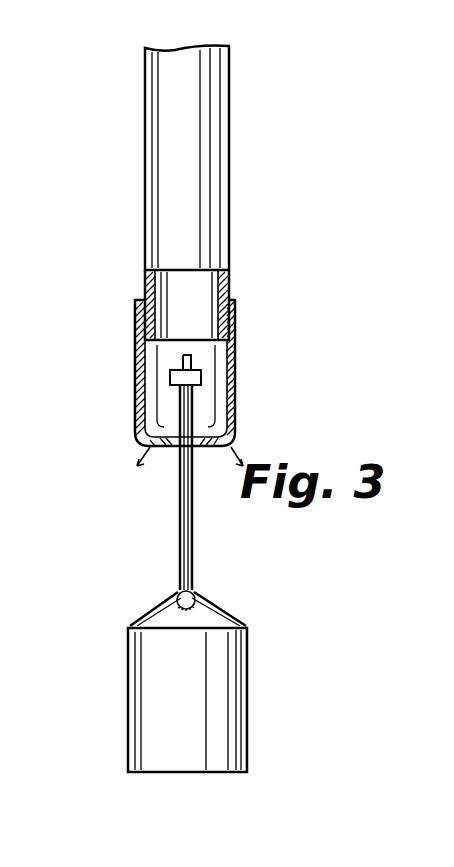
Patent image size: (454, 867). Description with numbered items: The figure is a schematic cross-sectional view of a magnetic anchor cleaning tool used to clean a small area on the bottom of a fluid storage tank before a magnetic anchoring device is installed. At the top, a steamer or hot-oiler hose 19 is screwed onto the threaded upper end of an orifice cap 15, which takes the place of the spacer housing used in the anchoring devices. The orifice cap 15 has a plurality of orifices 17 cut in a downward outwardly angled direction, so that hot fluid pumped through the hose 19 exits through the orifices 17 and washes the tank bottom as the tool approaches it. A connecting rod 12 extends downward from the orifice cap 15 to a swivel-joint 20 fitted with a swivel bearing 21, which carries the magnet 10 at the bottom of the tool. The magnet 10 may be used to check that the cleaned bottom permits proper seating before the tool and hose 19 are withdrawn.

The steamer or hot-oiler hose 19 is at (229, 157).
The orifice cap 15 is at (235, 340).
The orifices 17 is at (150, 447).
The connecting rod 12 is at (178, 535).
The swivel bearing 21 is at (197, 593).
The swivel-joint 20 is at (225, 614).
The magnet 10 is at (248, 723).